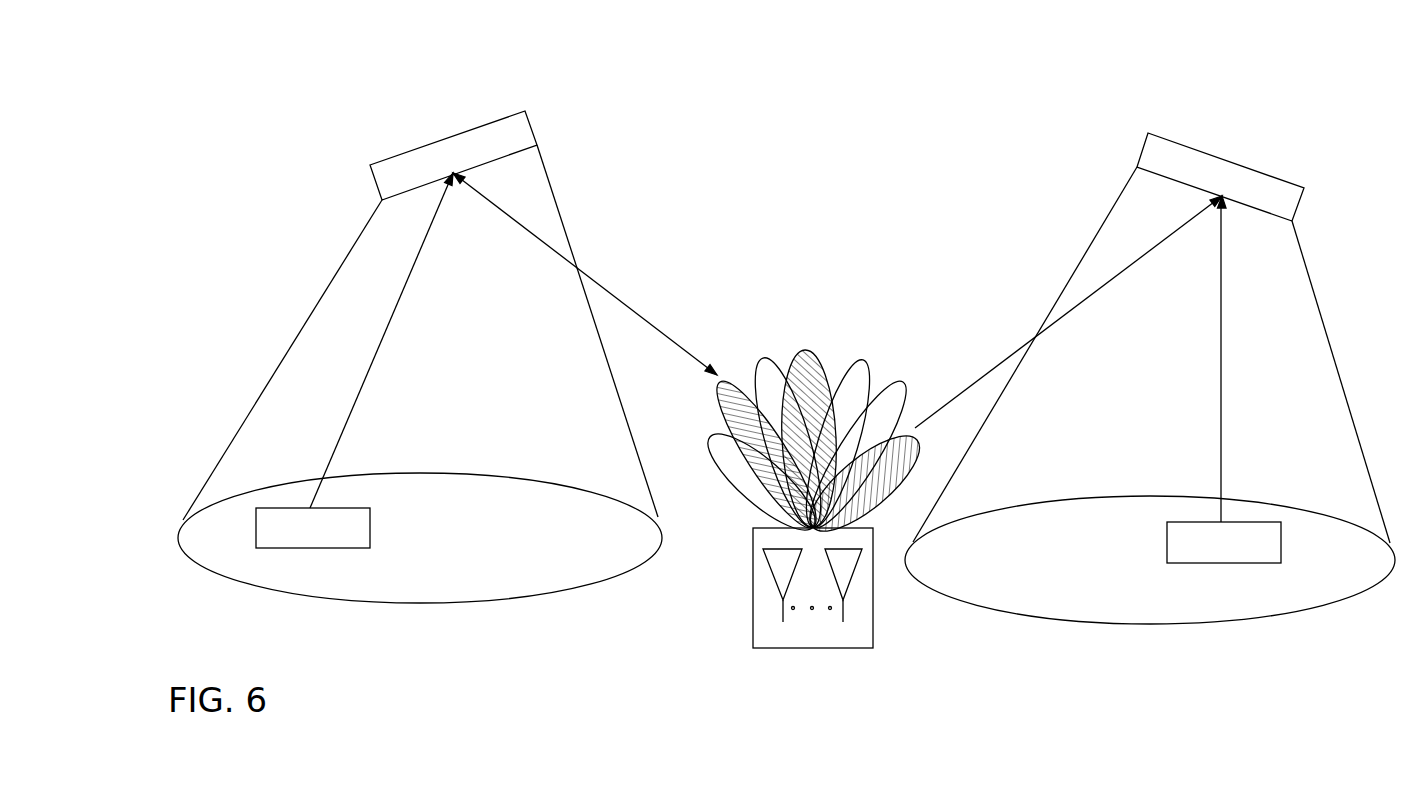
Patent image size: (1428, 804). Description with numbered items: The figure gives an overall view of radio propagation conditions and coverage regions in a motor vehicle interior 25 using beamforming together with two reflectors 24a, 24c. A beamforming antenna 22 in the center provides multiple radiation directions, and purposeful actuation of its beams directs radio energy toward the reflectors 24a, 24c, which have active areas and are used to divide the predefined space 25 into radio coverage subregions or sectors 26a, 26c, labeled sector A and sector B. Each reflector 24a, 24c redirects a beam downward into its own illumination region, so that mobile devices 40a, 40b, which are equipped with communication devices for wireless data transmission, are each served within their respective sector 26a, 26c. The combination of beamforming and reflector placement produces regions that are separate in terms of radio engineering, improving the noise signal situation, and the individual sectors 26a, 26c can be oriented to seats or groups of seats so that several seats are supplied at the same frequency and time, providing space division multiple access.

The motor vehicle interior 25 is at (332, 117).
The reflector 24a is at (527, 128).
The reflector 24c is at (1142, 145).
The sector 26a is at (520, 481).
The sector 26c is at (1030, 505).
The mobile device 40a is at (358, 510).
The mobile device 40b is at (1185, 523).
The beamforming antenna 22 is at (873, 615).